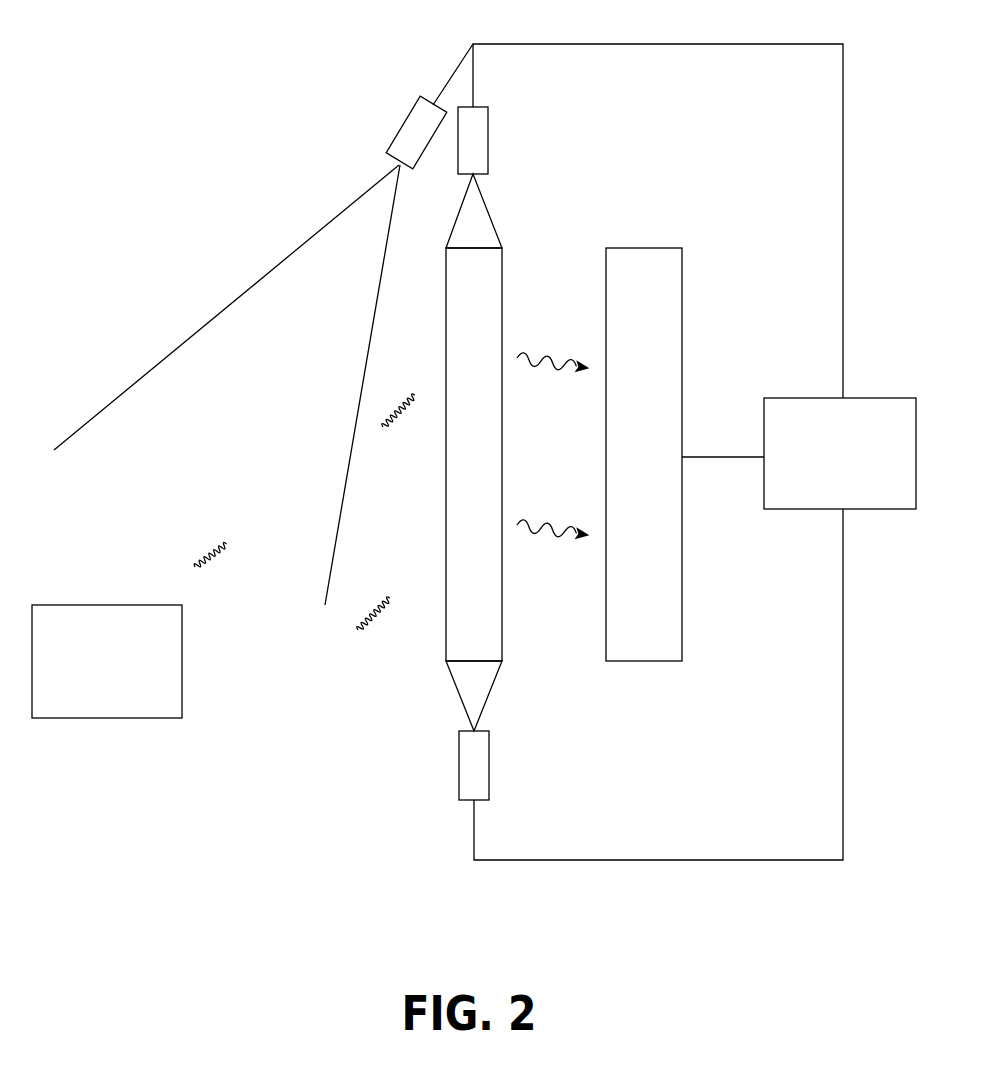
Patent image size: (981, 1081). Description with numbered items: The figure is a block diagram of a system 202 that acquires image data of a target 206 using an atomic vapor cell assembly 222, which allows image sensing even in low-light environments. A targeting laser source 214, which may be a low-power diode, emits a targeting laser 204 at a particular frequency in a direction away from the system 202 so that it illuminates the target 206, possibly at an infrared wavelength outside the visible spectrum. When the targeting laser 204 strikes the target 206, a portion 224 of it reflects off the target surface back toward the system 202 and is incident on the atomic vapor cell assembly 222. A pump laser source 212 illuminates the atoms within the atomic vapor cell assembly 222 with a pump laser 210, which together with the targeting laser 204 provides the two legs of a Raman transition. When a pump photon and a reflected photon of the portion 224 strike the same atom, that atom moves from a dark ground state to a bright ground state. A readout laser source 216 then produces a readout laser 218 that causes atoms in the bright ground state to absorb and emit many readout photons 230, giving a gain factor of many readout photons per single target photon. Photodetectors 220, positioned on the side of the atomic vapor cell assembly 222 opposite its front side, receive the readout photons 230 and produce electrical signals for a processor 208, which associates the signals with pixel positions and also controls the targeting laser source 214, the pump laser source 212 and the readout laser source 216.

The system 202 is at (236, 105).
The targeting laser 204 is at (240, 293).
The target 206 is at (89, 690).
The processor 208 is at (822, 483).
The pump laser 210 is at (453, 685).
The pump laser source 212 is at (490, 775).
The targeting laser source 214 is at (398, 130).
The readout laser source 216 is at (489, 155).
The readout laser 218 is at (497, 232).
The photodetectors 220 is at (684, 358).
The atomic vapor cell assembly 222 is at (446, 343).
The portion of the targeting laser 224 is at (195, 557).
The readout photons 230 is at (540, 523).